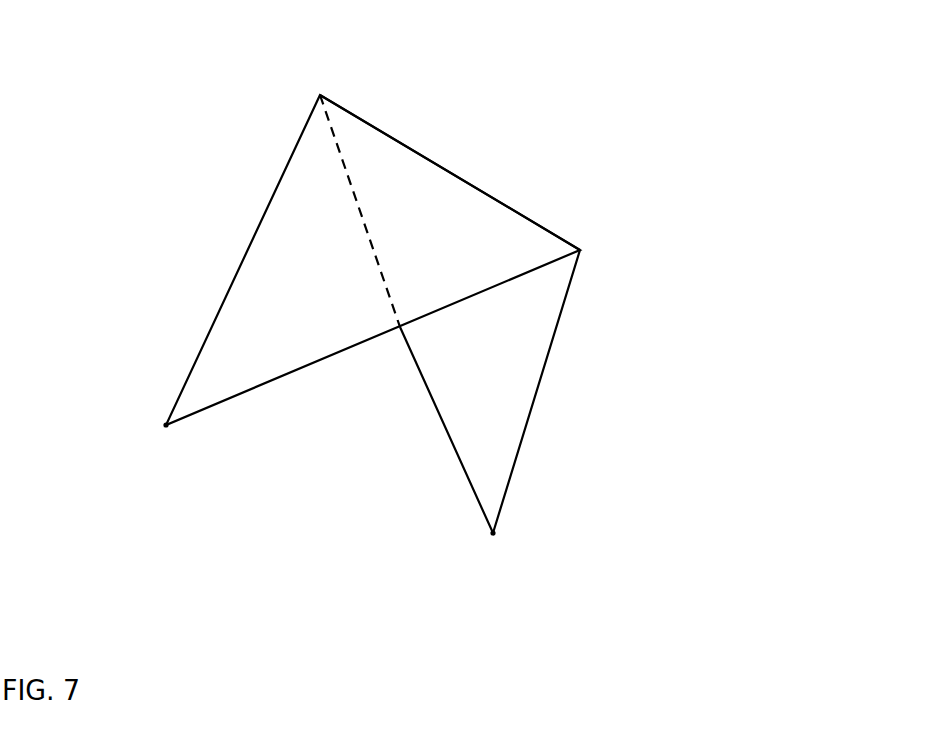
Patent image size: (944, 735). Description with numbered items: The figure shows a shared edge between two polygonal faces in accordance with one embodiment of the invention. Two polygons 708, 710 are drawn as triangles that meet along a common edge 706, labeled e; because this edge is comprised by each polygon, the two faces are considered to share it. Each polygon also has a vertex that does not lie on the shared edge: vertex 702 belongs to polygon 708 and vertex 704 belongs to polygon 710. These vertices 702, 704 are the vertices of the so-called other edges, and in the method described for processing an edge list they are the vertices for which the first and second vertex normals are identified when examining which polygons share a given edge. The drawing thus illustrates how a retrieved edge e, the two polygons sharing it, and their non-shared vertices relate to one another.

The vertex 702 is at (167, 448).
The vertex 704 is at (515, 533).
The shared edge 706 is at (450, 140).
The polygon 708 is at (275, 273).
The polygon 710 is at (493, 337).